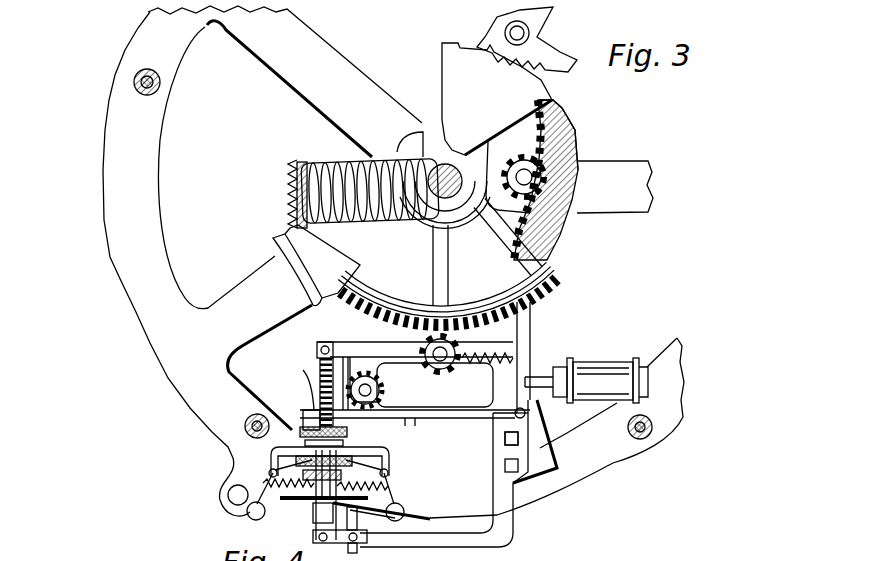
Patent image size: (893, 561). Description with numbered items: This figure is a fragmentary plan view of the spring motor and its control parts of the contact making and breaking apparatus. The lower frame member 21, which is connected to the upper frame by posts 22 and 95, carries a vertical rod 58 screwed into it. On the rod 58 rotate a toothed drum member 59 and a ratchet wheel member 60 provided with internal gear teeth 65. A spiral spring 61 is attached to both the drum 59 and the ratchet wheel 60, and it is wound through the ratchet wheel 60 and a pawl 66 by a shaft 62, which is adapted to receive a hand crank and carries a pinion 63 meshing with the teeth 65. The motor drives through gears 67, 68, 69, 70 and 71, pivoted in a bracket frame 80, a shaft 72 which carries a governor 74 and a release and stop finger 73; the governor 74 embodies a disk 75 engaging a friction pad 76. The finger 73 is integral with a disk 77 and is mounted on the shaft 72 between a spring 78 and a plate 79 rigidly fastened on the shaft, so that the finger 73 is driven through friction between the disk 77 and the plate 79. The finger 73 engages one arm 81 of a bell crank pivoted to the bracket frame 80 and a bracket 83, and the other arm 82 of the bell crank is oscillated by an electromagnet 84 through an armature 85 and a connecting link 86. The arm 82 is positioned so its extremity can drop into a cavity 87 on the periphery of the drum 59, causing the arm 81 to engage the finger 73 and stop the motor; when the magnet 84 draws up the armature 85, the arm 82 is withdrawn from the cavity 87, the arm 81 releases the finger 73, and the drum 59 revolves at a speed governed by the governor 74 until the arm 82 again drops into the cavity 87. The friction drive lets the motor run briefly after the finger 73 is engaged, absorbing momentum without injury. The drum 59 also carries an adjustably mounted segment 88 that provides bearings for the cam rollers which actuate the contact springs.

The lower frame member 21 is at (322, 88).
The post 22 is at (245, 420).
The post 95 is at (160, 82).
The pawl 66 is at (505, 32).
The ratchet wheel member 60 is at (468, 70).
The internal gear teeth 65 is at (548, 113).
The pinion 63 is at (542, 158).
The shaft 62 is at (524, 176).
The spiral spring 61 is at (348, 158).
The toothed drum member 59 is at (290, 209).
The vertical rod 58 is at (437, 186).
The cavity 87 is at (525, 292).
The segment 88 is at (313, 248).
The bracket frame 80 is at (393, 345).
The arm 82 is at (522, 330).
The electromagnet 84 is at (610, 372).
The armature 85 is at (557, 367).
The connecting link 86 is at (540, 378).
The bracket 83 is at (528, 416).
The gear 68 is at (518, 433).
The disk 77 is at (348, 405).
The arm 81 is at (408, 412).
The gear 67 is at (450, 375).
The gear 70 is at (390, 383).
The gear 71 is at (322, 370).
The plate 79 is at (310, 395).
The release and stop finger 73 is at (300, 423).
The spring 78 is at (350, 444).
The gear 69 is at (433, 422).
The governor 74 is at (323, 470).
The disk 75 is at (355, 495).
The friction pad 76 is at (396, 513).
The shaft 72 is at (357, 527).